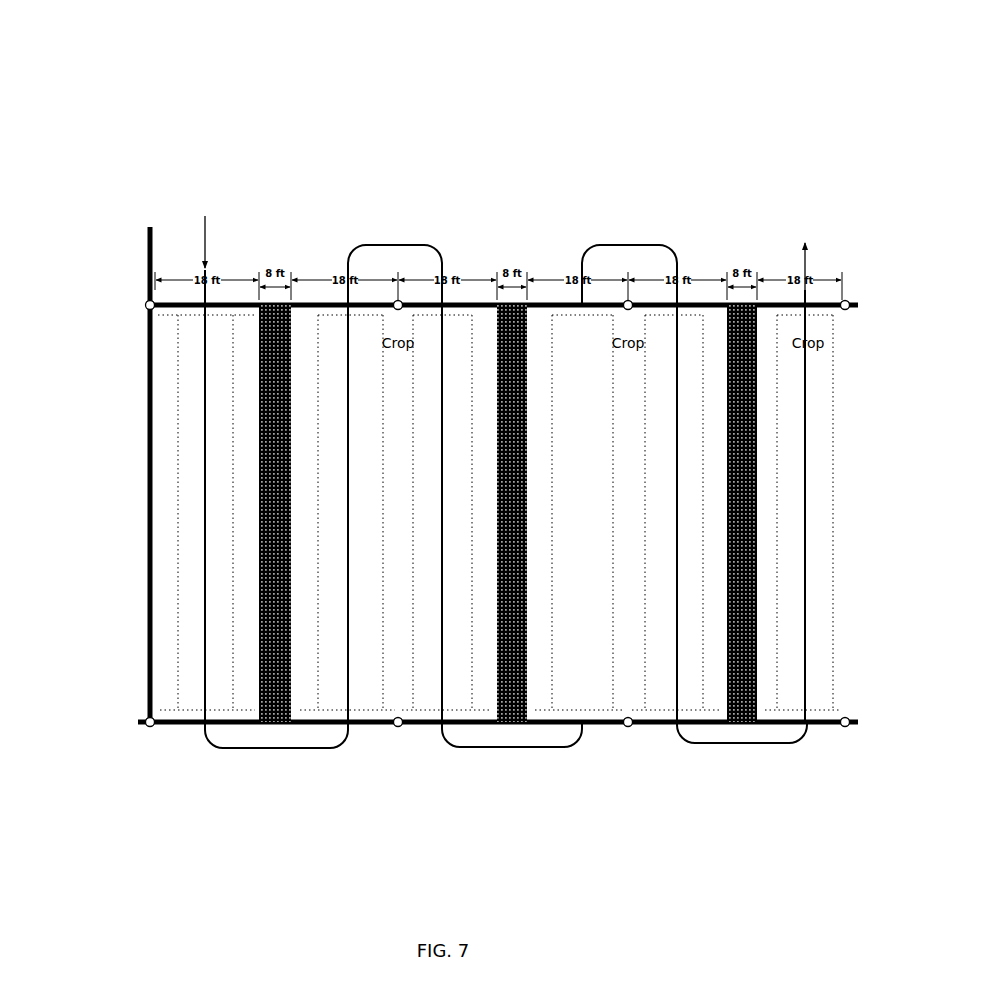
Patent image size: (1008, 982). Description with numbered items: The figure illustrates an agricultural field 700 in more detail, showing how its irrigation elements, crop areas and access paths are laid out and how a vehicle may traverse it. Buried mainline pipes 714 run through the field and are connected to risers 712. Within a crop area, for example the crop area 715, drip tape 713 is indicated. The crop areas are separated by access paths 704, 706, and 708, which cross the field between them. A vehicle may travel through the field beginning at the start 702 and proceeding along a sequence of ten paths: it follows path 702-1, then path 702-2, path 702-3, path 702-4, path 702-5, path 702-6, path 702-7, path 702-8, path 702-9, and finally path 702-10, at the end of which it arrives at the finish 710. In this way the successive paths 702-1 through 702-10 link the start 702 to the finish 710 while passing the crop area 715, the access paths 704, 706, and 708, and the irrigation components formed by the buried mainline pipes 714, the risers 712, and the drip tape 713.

The agricultural field 700 is at (784, 46).
The start 702 is at (229, 232).
The path 702-1 is at (212, 668).
The path 702-2 is at (273, 748).
The path 702-3 is at (352, 690).
The path 702-4 is at (400, 245).
The path 702-5 is at (445, 683).
The path 702-6 is at (512, 747).
The path 702-7 is at (613, 245).
The path 702-8 is at (679, 690).
The path 702-9 is at (747, 745).
The path 702-10 is at (807, 690).
The access path 704 is at (283, 300).
The access path 706 is at (506, 300).
The access path 708 is at (745, 300).
The finish 710 is at (831, 258).
The riser 712 is at (150, 725).
The drip tape 713 is at (178, 702).
The buried mainline pipe 714 is at (185, 724).
The crop area 715 is at (222, 330).